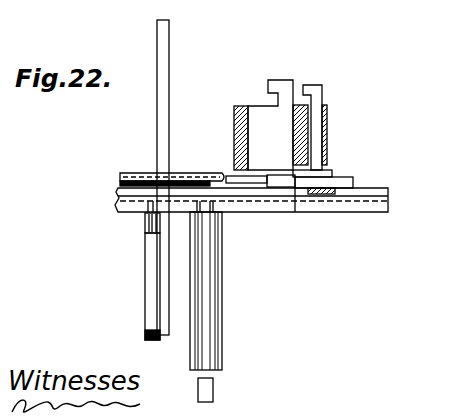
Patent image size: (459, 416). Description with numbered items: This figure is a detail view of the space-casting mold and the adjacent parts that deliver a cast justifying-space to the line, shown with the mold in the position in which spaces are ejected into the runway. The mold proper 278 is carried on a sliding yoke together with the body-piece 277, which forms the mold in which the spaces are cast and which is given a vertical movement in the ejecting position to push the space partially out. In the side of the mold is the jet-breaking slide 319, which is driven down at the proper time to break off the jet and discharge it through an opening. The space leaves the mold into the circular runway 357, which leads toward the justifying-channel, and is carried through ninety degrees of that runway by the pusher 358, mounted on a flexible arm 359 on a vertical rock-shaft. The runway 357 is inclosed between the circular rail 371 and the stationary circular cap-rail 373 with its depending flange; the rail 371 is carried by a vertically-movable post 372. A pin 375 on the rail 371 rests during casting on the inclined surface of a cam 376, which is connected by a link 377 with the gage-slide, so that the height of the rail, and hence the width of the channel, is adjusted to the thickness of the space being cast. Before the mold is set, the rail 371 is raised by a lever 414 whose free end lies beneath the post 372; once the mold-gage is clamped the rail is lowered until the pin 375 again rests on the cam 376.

The body-piece 277 is at (290, 128).
The mold proper 278 is at (238, 106).
The jet-breaking slide 319 is at (322, 93).
The circular runway 357 is at (119, 184).
The pusher 358 is at (340, 183).
The flexible arm 359 is at (325, 194).
The circular rail 371 is at (378, 190).
The vertically-movable post 372 is at (222, 263).
The stationary circular cap-rail 373 is at (142, 173).
The pin 375 is at (144, 226).
The cam 376 is at (147, 278).
The link 377 is at (168, 57).
The lever 414 is at (213, 388).